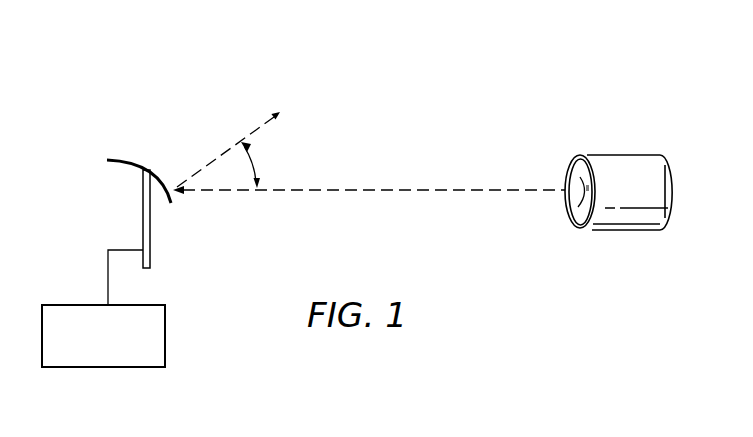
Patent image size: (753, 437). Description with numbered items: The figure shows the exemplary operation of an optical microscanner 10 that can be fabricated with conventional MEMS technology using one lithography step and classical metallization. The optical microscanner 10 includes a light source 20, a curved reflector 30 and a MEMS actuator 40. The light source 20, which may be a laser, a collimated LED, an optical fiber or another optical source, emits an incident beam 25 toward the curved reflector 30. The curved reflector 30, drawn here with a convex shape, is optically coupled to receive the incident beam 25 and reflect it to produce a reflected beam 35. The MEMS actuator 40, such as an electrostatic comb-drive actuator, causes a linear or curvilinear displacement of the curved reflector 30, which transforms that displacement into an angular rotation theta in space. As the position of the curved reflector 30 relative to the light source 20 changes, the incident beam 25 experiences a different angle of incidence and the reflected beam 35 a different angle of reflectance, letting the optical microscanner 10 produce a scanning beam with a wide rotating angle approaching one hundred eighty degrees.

The optical microscanner 10 is at (148, 56).
The light source 20 is at (618, 153).
The incident beam 25 is at (380, 190).
The curved reflector 30 is at (123, 158).
The reflected beam 35 is at (252, 128).
The MEMS actuator 40 is at (92, 367).